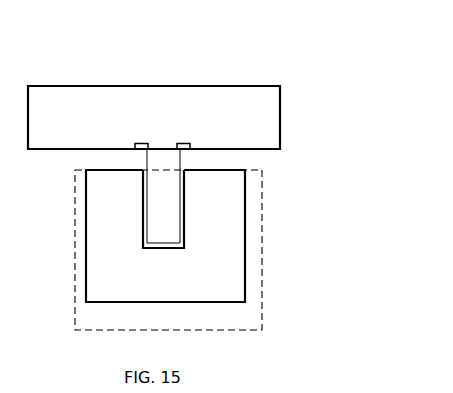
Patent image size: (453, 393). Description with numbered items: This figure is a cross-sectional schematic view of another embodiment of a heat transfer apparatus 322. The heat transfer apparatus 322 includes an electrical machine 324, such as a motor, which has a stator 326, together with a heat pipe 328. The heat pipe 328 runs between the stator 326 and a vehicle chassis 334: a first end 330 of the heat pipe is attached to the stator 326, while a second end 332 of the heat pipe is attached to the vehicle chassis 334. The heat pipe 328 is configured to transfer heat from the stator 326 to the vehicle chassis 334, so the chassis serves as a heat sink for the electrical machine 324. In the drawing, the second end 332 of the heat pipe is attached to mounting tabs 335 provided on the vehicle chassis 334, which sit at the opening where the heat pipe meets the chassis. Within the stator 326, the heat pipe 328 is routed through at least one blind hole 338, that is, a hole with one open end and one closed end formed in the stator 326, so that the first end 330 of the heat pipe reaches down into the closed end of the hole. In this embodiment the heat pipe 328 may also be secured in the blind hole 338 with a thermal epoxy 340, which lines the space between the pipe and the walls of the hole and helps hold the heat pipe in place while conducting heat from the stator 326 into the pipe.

The heat transfer apparatus 322 is at (62, 228).
The electrical machine 324 is at (100, 331).
The stator 326 is at (245, 270).
The heat pipe 328 is at (168, 235).
The first end 330 is at (162, 245).
The second end 332 is at (158, 146).
The vehicle chassis 334 is at (42, 86).
The mounting tabs 335 is at (138, 143).
The blind hole 338 is at (186, 202).
The thermal epoxy 340 is at (183, 219).